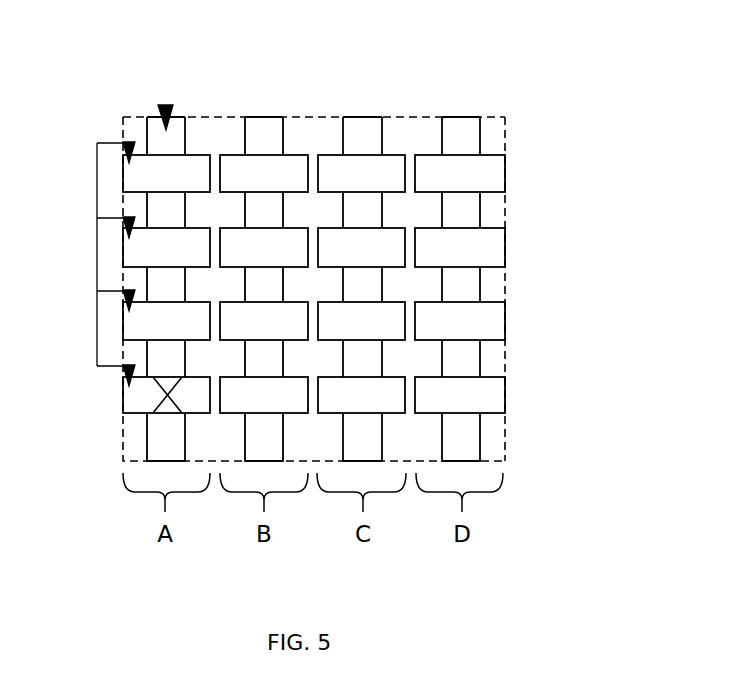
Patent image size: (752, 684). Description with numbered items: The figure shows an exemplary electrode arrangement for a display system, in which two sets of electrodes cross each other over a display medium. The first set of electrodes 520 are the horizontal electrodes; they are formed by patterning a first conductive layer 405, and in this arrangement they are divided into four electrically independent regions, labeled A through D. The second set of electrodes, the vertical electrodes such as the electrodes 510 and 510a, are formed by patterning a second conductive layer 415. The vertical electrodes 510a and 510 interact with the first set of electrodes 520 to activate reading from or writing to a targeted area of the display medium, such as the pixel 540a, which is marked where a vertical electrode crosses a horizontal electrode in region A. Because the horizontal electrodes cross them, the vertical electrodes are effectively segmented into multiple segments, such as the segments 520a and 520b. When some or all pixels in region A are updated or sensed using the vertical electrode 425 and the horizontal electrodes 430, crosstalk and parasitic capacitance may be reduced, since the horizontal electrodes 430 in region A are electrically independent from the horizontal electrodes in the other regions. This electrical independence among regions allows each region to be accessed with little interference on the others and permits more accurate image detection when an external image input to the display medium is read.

The first conductive layer 405 is at (313, 125).
The second conductive layer 415 is at (485, 216).
The second electrode 510a is at (177, 125).
The second electrode 510 is at (473, 141).
The first set of electrodes 520 is at (472, 327).
The segment 520a is at (192, 398).
The segment 520b is at (290, 398).
The pixel 540a is at (166, 395).
The vertical electrode 425 is at (97, 143).
The horizontal electrode 430 is at (90, 256).